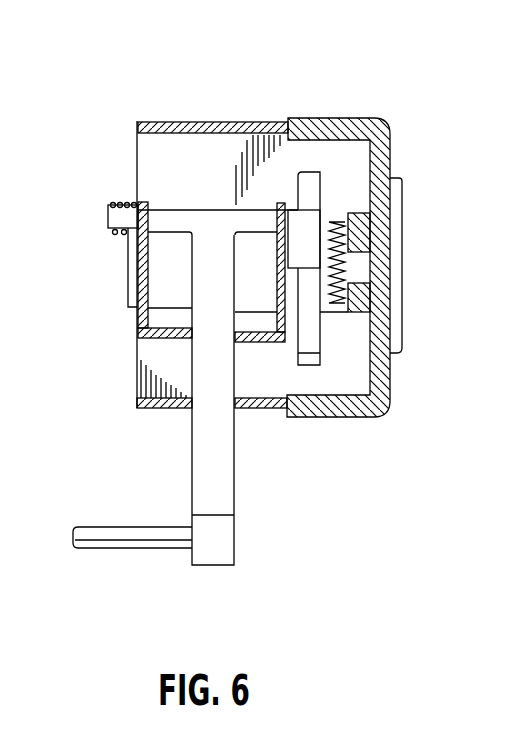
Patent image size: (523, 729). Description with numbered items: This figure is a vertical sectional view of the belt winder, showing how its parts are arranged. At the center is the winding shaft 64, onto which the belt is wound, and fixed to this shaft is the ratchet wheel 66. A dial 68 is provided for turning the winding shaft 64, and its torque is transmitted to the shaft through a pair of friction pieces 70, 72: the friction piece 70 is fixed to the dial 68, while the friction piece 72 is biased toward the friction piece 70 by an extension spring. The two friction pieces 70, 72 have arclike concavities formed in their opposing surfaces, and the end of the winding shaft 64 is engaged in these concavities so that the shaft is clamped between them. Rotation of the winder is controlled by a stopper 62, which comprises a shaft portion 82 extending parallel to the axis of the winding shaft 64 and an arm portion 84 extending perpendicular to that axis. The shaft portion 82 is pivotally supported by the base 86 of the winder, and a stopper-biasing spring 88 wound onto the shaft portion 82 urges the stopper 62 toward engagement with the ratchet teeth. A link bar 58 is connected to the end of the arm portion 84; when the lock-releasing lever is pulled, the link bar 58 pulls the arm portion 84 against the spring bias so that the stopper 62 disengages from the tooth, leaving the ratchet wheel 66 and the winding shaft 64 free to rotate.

The link bar 58 is at (110, 540).
The stopper 62 is at (195, 217).
The winding shaft 64 is at (160, 278).
The ratchet wheel 66 is at (298, 172).
The dial 68 is at (390, 143).
The friction piece 70 is at (358, 222).
The friction piece 72 is at (352, 310).
The shaft portion 82 is at (167, 215).
The arm portion 84 is at (218, 470).
The base 86 is at (160, 343).
The stopper-biasing spring 88 is at (108, 206).